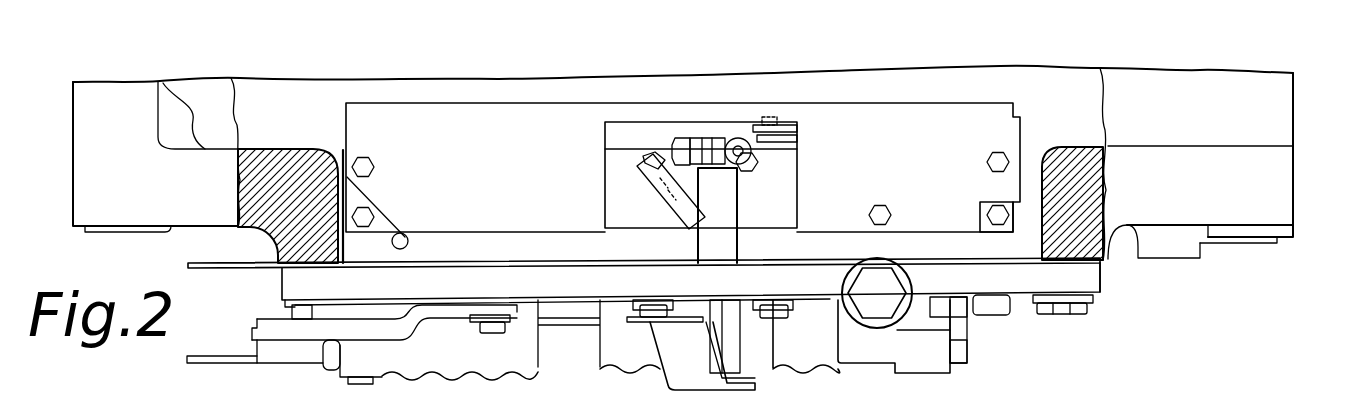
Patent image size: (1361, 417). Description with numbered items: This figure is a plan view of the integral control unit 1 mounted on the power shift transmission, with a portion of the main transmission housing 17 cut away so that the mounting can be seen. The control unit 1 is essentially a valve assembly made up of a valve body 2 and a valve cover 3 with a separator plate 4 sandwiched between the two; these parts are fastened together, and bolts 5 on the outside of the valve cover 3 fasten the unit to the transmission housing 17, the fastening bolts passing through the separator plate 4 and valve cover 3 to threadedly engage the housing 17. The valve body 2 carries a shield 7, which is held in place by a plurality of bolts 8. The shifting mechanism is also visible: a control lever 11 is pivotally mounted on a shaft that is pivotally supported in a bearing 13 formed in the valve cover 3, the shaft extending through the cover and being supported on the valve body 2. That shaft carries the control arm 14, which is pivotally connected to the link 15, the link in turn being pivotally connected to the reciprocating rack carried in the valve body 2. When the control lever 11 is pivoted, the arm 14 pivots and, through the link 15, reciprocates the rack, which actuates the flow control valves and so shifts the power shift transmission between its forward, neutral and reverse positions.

The control unit 1 is at (1104, 282).
The valve body 2 is at (1016, 240).
The valve cover 3 is at (929, 356).
The separator plate 4 is at (508, 262).
The bolts 5 is at (478, 326).
The shield 7 is at (1000, 118).
The bolts 8 is at (393, 183).
The control lever 11 is at (755, 386).
The bearing 13 is at (735, 343).
The control arm 14 is at (755, 135).
The link 15 is at (775, 140).
The main transmission housing 17 is at (1282, 193).